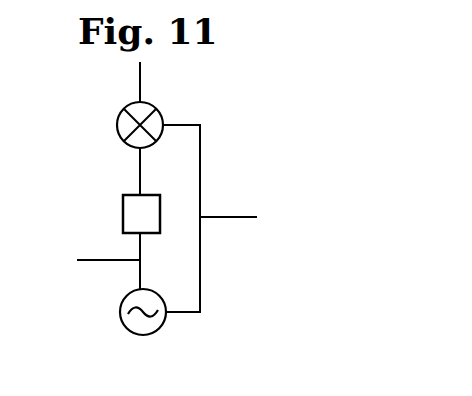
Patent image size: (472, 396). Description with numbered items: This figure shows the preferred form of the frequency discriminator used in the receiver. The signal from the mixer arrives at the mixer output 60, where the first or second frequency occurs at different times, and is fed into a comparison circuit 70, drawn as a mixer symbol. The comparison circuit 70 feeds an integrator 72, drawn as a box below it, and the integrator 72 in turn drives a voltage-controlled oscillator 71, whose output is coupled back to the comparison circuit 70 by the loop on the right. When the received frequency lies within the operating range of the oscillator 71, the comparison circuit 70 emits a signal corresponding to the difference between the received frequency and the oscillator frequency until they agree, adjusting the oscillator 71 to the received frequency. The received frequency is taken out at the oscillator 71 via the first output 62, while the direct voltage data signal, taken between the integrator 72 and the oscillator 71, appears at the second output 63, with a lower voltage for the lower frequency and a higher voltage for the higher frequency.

The output of mixer 60 is at (147, 74).
The comparison circuit 70 is at (117, 122).
The integrator 72 is at (122, 197).
The second output of frequency discriminator 63 is at (97, 258).
The voltage-controlled oscillator 71 is at (120, 303).
The first output of frequency discriminator 62 is at (232, 215).